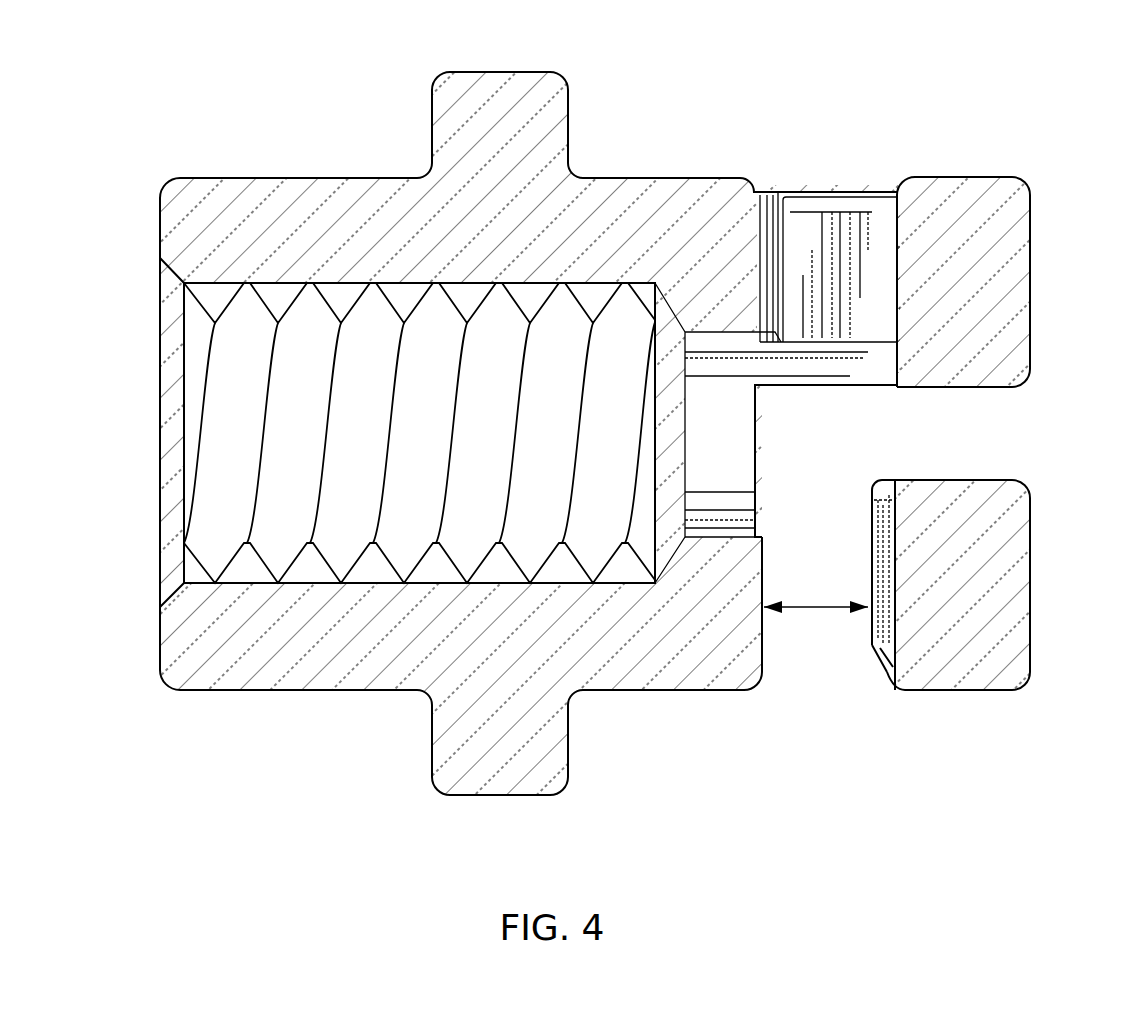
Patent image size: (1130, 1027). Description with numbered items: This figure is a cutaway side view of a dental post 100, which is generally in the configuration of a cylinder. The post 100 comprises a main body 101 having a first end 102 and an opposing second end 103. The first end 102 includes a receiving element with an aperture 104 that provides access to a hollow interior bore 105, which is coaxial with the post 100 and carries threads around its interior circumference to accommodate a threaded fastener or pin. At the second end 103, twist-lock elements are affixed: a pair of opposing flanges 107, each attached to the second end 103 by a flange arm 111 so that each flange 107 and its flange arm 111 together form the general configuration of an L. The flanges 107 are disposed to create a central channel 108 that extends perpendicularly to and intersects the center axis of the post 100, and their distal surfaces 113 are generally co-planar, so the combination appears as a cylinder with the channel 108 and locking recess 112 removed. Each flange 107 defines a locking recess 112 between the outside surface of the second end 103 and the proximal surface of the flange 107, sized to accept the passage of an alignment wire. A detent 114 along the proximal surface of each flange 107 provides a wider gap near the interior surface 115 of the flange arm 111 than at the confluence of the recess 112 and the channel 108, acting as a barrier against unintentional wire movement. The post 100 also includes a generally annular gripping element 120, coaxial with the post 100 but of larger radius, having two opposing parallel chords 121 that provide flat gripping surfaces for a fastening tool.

The post 100 is at (890, 92).
The main body 101 is at (305, 178).
The first end 102 is at (160, 222).
The second end 103 is at (762, 642).
The aperture 104 is at (160, 456).
The hollow interior bore 105 is at (570, 318).
The flanges 107 is at (960, 208).
The central channel 108 is at (1005, 427).
The flange arm 111 is at (805, 190).
The locking recess 112 is at (815, 610).
The distal surfaces of the flanges 113 is at (1030, 243).
The detent 114 is at (892, 648).
The interior surface of the flange arm 115 is at (862, 213).
The gripping element 120 is at (440, 792).
The chords 121 is at (505, 797).